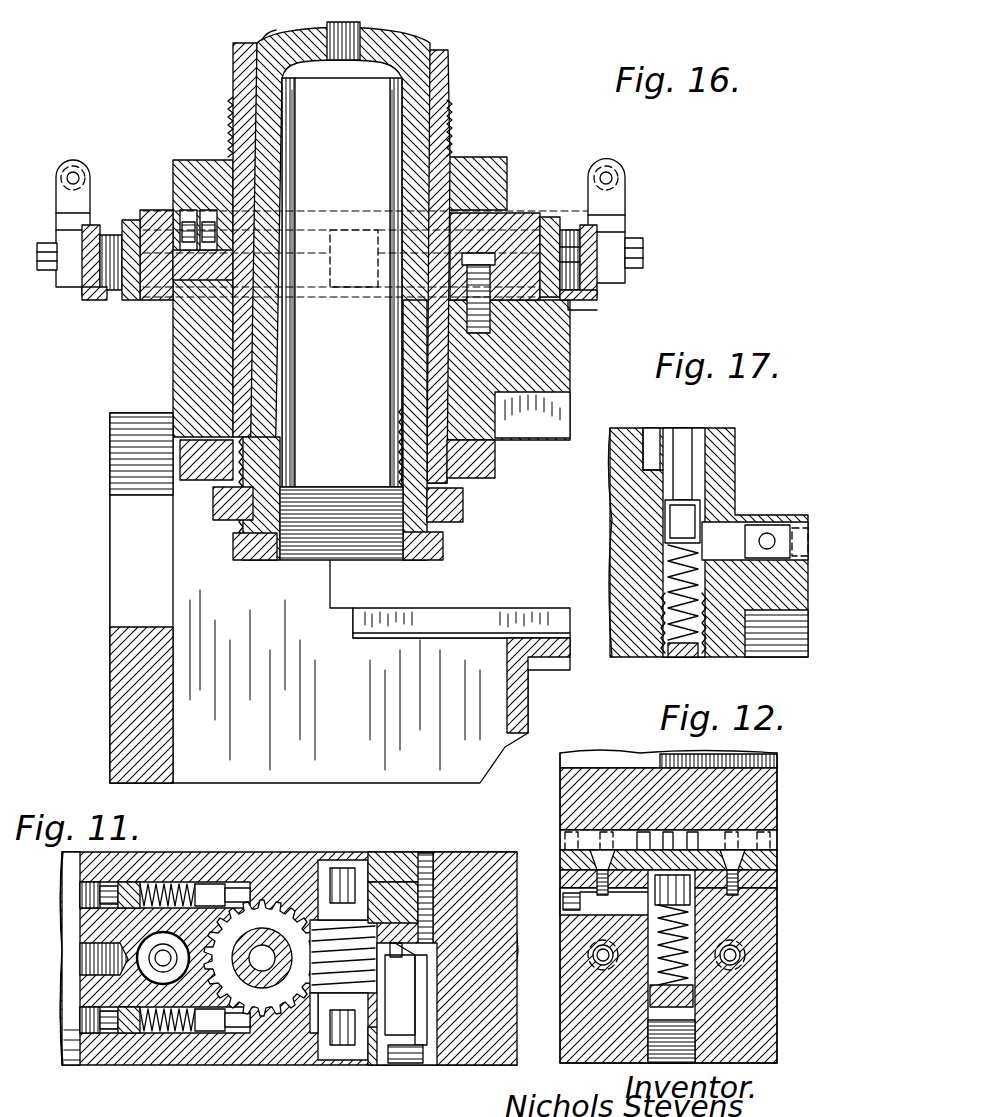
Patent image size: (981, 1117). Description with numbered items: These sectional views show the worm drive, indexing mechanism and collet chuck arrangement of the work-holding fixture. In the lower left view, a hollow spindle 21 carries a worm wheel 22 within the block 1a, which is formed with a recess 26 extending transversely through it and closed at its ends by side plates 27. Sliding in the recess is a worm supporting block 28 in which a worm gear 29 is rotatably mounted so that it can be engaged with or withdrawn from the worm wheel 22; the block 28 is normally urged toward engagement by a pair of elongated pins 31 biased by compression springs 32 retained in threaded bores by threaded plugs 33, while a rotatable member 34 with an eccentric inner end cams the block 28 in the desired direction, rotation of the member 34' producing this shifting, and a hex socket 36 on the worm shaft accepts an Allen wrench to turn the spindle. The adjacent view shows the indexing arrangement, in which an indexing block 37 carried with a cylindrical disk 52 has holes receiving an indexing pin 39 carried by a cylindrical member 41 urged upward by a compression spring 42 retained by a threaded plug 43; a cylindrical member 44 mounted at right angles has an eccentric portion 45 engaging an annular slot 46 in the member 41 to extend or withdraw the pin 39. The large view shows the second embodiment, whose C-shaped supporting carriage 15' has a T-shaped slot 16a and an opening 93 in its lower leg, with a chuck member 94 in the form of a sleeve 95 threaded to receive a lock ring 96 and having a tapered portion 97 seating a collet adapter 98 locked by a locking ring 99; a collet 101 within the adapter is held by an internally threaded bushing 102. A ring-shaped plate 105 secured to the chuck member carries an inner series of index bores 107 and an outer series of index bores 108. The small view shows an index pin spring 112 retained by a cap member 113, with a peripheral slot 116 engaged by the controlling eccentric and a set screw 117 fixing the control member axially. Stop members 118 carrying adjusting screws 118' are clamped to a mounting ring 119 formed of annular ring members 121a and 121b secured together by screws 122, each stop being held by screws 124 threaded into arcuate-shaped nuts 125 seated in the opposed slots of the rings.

In FIG. 16, the opening 93 is at (462, 757).
In FIG. 16, the chuck member 94 is at (455, 205).
In FIG. 16, the sleeve 95 is at (452, 382).
In FIG. 16, the lock ring 96 is at (497, 470).
In FIG. 16, the tapered portion 97 is at (440, 100).
In FIG. 16, the collet adapter 98 is at (437, 62).
In FIG. 16, the locking ring 99 is at (465, 510).
In FIG. 16, the collet 101 is at (266, 36).
In FIG. 16, the internally threaded bushing 102 is at (412, 562).
In FIG. 16, the ring-shaped plate 105 is at (518, 215).
In FIG. 16, the inner series of index bores 107 is at (209, 225).
In FIG. 16, the outer series of index bores 108 is at (186, 225).
In FIG. 16, the supporting carriage 15' is at (461, 604).
In FIG. 16, the T-shaped slot 16a is at (555, 672).
In FIG. 16, the stop member 118 is at (352, 212).
In FIG. 16, the adjusting screw 118' is at (360, 155).
In FIG. 16, the mounting ring 119 is at (616, 300).
In FIG. 16, the annular ring member 121a is at (585, 237).
In FIG. 16, the annular ring member 121b is at (600, 285).
In FIG. 16, the screws 122 is at (100, 302).
In FIG. 16, the screws 124 is at (47, 272).
In FIG. 16, the arcuate-shaped nuts 125 is at (578, 305).
In FIG. 17, the spring 112 is at (672, 573).
In FIG. 17, the cap member 113 is at (678, 650).
In FIG. 17, the peripheral slot 116 is at (672, 530).
In FIG. 17, the set screw 117 is at (700, 490).
In FIG. 12, the cylindrical disk 52 is at (778, 760).
In FIG. 12, the indexing block 37 is at (765, 790).
In FIG. 12, the indexing pin 39 is at (670, 842).
In FIG. 12, the cylindrical member 41 is at (740, 940).
In FIG. 11, the cylindrical member 41 is at (138, 948).
In FIG. 12, the cylindrical member 44 is at (565, 912).
In FIG. 12, the eccentric portion 45 is at (628, 913).
In FIG. 12, the annular slot 46 is at (690, 900).
In FIG. 12, the compression spring 42 is at (690, 980).
In FIG. 11, the compression spring 42 is at (130, 978).
In FIG. 12, the threaded plug 43 is at (690, 1010).
In FIG. 12, the compression springs 32 is at (592, 957).
In FIG. 11, the compression springs 32 is at (165, 880).
In FIG. 12, the threaded plugs 33 is at (583, 975).
In FIG. 11, the threaded plugs 33 is at (130, 880).
In FIG. 12, the block 1a is at (575, 1066).
In FIG. 11, the block 1a is at (470, 880).
In FIG. 11, the recess 26 is at (447, 875).
In FIG. 11, the elongated pins 31 is at (250, 880).
In FIG. 11, the worm wheel 22 is at (262, 945).
In FIG. 11, the hollow spindle 21 is at (325, 920).
In FIG. 11, the worm gear 29 is at (335, 860).
In FIG. 11, the worm supporting block 28 is at (350, 862).
In FIG. 11, the side plates 27 is at (385, 875).
In FIG. 11, the hex socket 36 is at (330, 1062).
In FIG. 11, the rotatable member 34 is at (414, 1022).
In FIG. 11, the rotatable member 34' is at (438, 953).